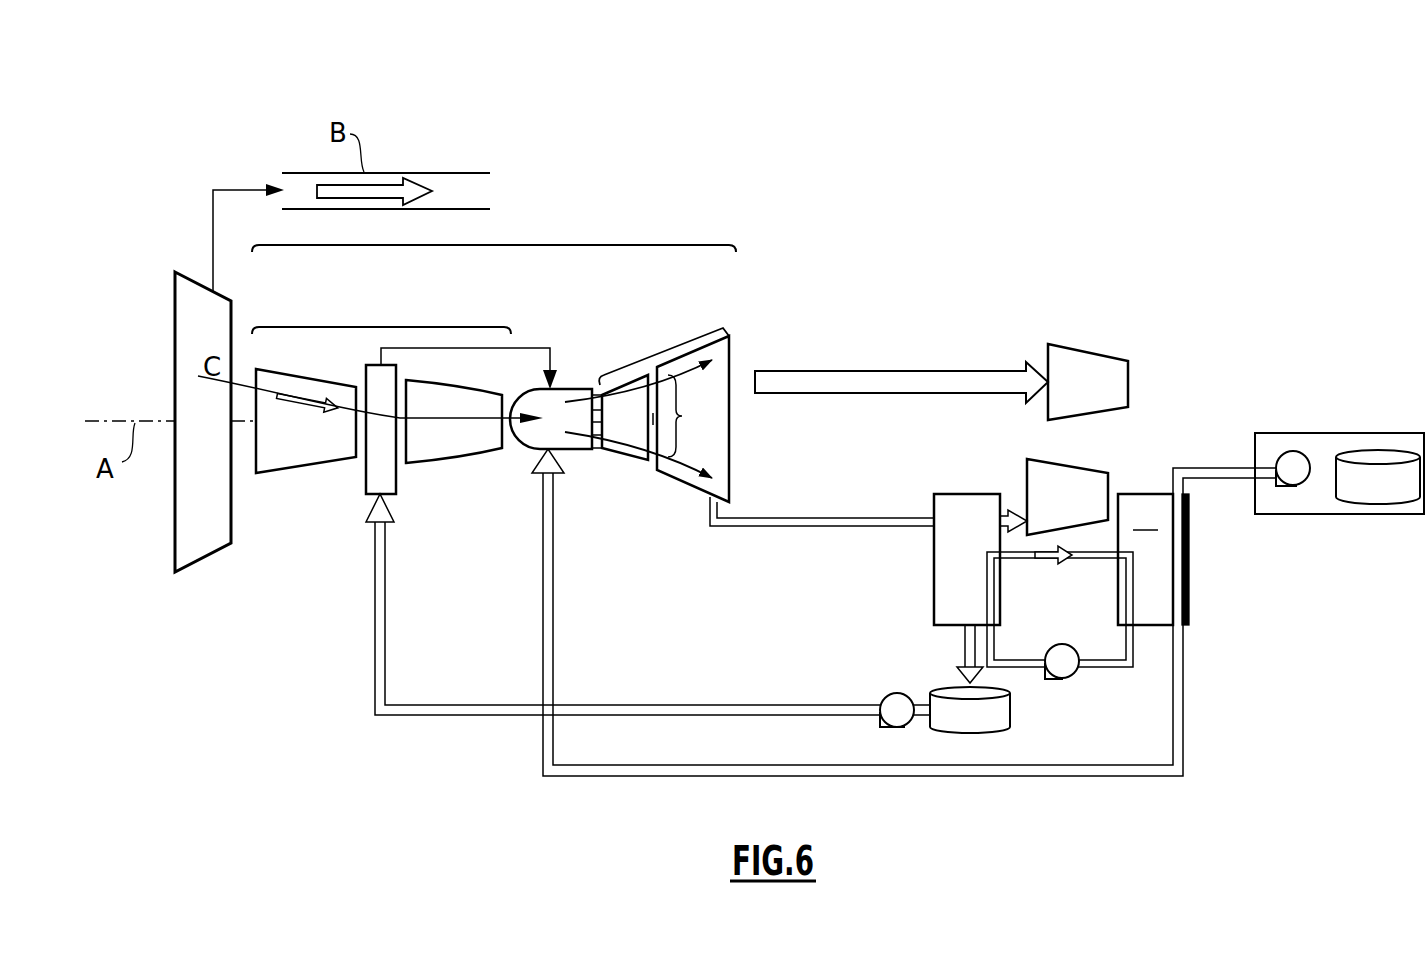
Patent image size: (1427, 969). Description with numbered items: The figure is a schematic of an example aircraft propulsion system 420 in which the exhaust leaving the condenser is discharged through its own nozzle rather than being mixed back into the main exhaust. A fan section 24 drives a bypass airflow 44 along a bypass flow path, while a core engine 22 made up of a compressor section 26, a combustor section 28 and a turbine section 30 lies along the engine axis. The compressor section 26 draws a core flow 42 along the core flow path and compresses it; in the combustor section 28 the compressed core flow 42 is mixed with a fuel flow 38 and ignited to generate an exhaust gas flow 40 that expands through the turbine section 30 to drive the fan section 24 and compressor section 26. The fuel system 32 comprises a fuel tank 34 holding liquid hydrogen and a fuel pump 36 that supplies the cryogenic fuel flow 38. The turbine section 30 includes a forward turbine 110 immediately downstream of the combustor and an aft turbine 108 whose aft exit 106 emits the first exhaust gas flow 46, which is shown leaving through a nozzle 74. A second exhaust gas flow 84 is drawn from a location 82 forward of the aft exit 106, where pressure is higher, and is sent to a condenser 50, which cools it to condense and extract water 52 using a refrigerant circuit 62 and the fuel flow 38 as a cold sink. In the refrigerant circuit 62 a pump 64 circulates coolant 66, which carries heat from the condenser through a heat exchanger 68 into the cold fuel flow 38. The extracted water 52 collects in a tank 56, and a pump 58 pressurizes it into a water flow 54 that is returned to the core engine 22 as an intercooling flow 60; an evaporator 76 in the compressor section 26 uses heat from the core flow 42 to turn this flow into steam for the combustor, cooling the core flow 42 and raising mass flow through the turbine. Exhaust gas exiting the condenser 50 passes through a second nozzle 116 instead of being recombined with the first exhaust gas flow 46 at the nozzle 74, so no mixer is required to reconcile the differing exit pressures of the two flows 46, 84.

The propulsion system 420 is at (1080, 205).
The core engine 22 is at (505, 245).
The fan section 24 is at (200, 555).
The compressor section 26 is at (383, 326).
The combustor section 28 is at (533, 438).
The turbine section 30 is at (657, 357).
The fuel system 32 is at (1348, 433).
The fuel tank 34 is at (1368, 516).
The fuel pump 36 is at (1298, 488).
The fuel flow 38 is at (554, 620).
The exhaust gas flow 40 is at (562, 419).
The core flow 42 is at (306, 410).
The bypass airflow 44 is at (392, 190).
The first exhaust gas flow 46 is at (828, 386).
The condenser 50 is at (934, 581).
The water 52 is at (965, 645).
The water flow 54 is at (702, 705).
The tank 56 is at (1011, 713).
The pump 58 is at (905, 719).
The intercooling flow 60 is at (383, 574).
The refrigerant circuit 62 is at (1105, 668).
The pump 64 is at (1062, 650).
The coolant 66 is at (1048, 563).
The heat exchanger 68 is at (1153, 559).
The core nozzle 74 is at (1122, 357).
The evaporator 76 is at (366, 473).
The location 82 is at (705, 503).
The second exhaust gas flow 84 is at (792, 526).
The aft exit 106 is at (732, 444).
The aft turbine 108 is at (720, 350).
The forward turbine 110 is at (635, 451).
The second nozzle 116 is at (1100, 473).